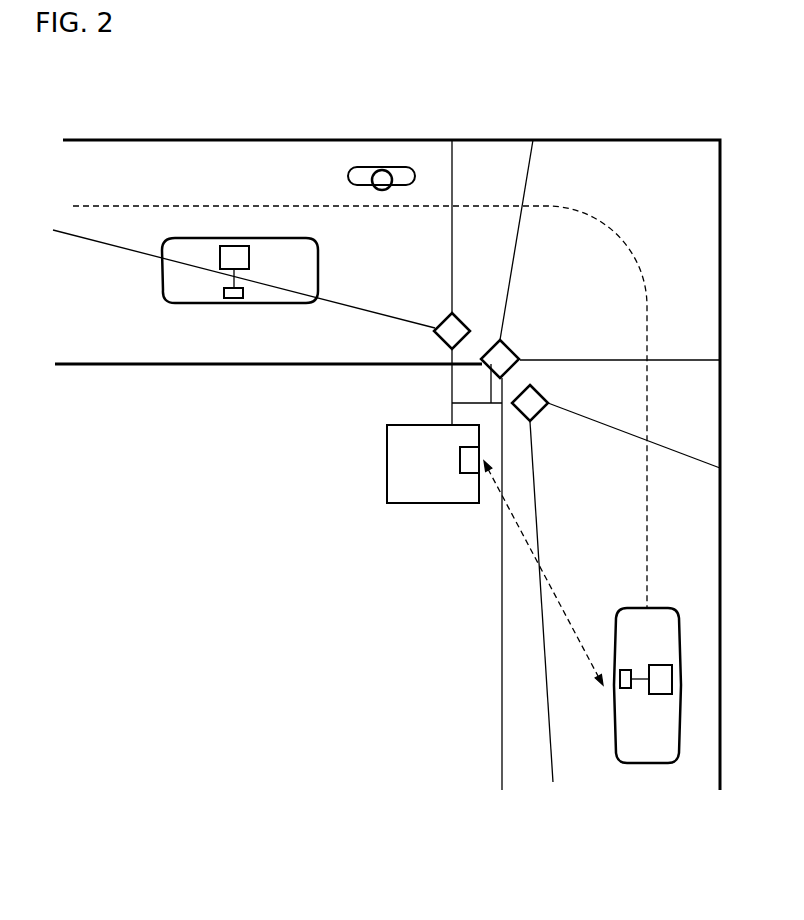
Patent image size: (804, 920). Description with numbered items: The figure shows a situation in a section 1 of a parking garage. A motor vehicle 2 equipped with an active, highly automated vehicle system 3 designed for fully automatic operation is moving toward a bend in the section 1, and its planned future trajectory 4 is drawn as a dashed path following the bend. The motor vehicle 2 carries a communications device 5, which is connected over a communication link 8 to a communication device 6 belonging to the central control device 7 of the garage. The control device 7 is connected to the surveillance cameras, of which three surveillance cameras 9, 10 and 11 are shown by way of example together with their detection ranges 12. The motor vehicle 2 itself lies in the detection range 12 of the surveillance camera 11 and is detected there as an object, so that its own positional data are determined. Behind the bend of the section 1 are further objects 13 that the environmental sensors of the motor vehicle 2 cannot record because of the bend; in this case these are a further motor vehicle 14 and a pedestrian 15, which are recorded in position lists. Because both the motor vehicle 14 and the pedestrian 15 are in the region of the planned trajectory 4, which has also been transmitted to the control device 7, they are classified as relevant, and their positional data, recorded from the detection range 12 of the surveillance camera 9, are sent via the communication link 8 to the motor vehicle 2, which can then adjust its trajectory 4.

The section 1 is at (200, 365).
The motor vehicle 2 is at (627, 607).
The vehicle system 3 is at (661, 694).
The trajectory 4 is at (651, 541).
The communications device 5 is at (626, 670).
The communication device 6 is at (460, 462).
The control device 7 is at (387, 463).
The communication link 8 is at (522, 538).
The surveillance camera 9 is at (437, 345).
The surveillance camera 10 is at (512, 342).
The surveillance camera 11 is at (541, 394).
The detection range 12 is at (509, 285).
The objects 13 is at (234, 238).
The further motor vehicle 14 is at (172, 305).
The pedestrian 15 is at (397, 187).